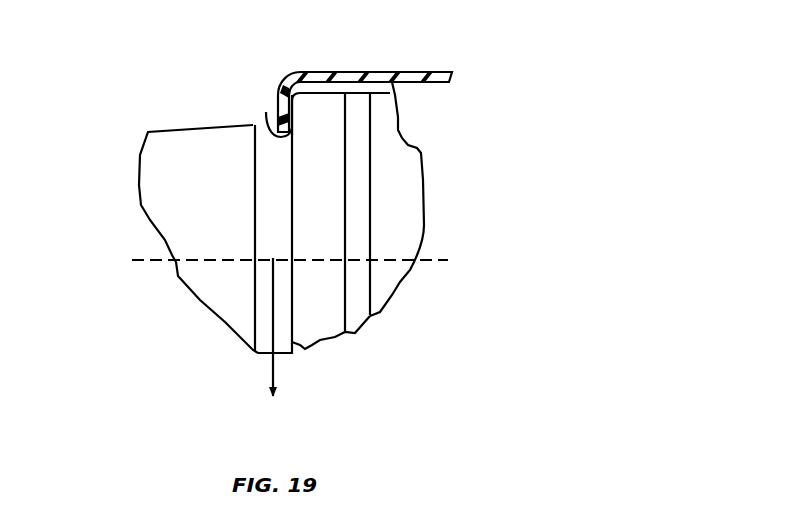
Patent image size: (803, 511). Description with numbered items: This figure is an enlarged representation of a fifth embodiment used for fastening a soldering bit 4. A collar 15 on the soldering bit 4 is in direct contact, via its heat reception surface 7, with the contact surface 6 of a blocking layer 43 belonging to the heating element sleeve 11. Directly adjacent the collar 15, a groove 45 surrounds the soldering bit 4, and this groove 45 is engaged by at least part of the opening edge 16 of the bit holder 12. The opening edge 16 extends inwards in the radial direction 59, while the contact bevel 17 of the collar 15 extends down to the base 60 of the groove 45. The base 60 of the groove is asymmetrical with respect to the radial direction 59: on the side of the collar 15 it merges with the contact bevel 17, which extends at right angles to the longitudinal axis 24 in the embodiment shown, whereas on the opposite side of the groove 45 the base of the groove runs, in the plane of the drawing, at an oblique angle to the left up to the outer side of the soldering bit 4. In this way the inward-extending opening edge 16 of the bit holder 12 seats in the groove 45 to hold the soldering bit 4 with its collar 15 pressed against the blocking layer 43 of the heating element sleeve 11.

The soldering bit 4 is at (128, 204).
The contact surface 6 is at (341, 292).
The heat reception surface 7 is at (348, 200).
The heating element sleeve 11 is at (404, 232).
The bit holder 12 is at (369, 72).
The collar 15 is at (332, 197).
The opening edge 16 is at (288, 72).
The contact bevel 17 is at (296, 124).
The longitudinal axis 24 is at (178, 268).
The blocking layer 43 is at (363, 273).
The groove 45 is at (272, 176).
The radial direction 59 is at (271, 366).
The base of the groove 60 is at (266, 112).